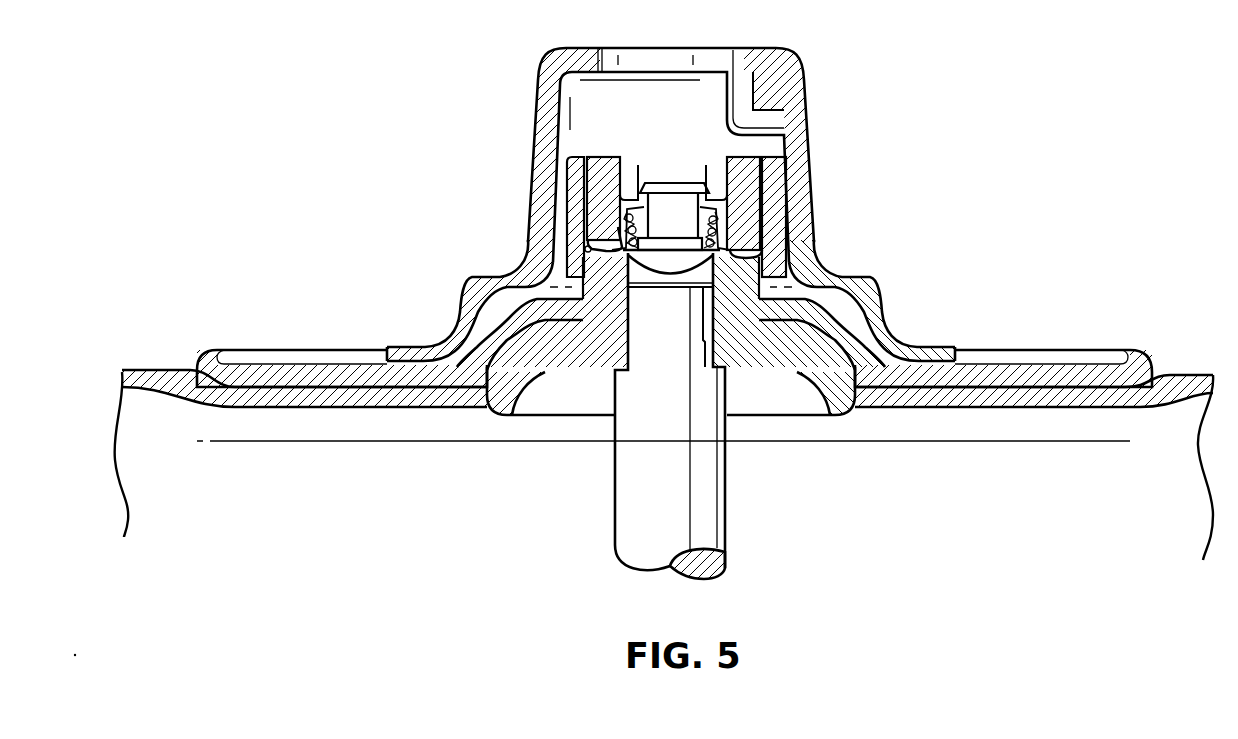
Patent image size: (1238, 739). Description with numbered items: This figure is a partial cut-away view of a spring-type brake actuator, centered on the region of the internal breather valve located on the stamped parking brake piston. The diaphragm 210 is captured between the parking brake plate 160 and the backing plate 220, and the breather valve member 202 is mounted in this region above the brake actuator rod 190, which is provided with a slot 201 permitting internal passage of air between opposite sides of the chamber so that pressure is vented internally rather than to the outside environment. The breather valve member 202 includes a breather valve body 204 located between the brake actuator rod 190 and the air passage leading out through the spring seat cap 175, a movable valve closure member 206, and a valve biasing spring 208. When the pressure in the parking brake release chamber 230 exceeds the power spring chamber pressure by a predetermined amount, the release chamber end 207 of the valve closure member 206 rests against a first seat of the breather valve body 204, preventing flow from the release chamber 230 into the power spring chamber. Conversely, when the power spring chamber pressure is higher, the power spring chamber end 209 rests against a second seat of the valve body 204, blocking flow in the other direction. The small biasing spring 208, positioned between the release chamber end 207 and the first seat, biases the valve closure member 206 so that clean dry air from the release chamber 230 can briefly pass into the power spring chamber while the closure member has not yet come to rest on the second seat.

The parking brake plate 160 is at (197, 352).
The spring seat cap 175 is at (457, 320).
The brake actuator rod 190 is at (700, 514).
The slot 201 is at (705, 344).
The breather valve member 202 is at (775, 150).
The breather valve body 204 is at (595, 172).
The valve closure member 206 is at (670, 182).
The release chamber end 207 is at (740, 252).
The valve biasing spring 208 is at (598, 234).
The power spring chamber end 209 is at (733, 193).
The diaphragm 210 is at (122, 372).
The backing plate 220 is at (587, 352).
The parking brake release chamber 230 is at (418, 508).